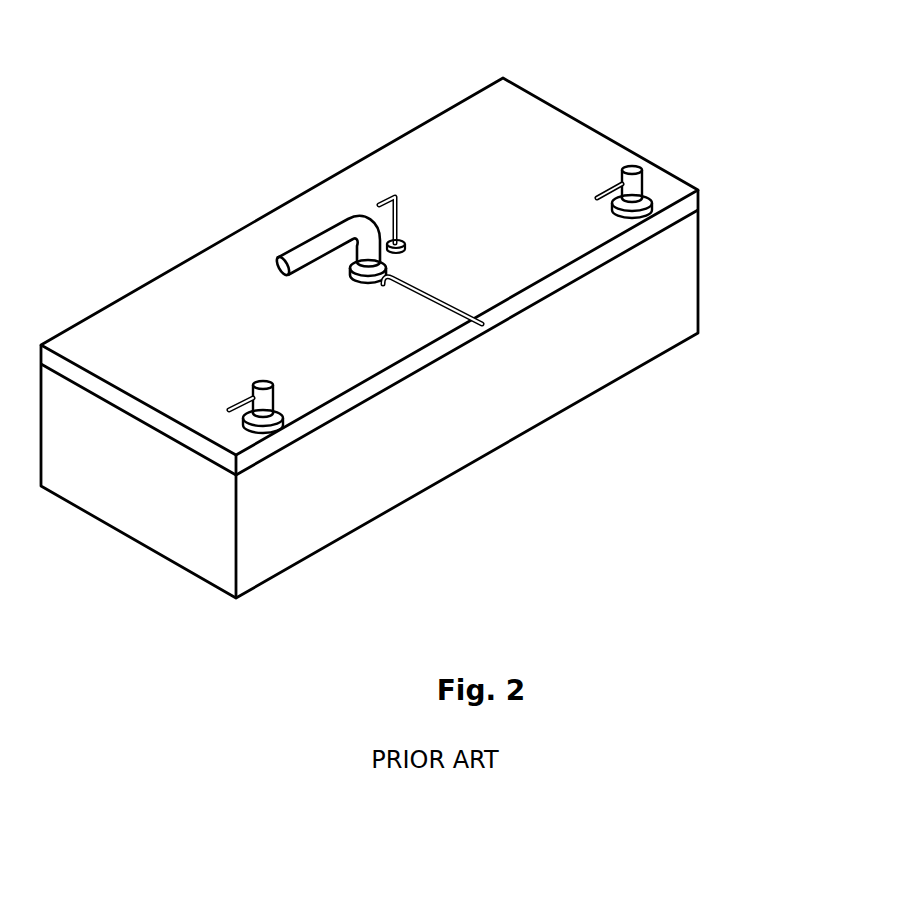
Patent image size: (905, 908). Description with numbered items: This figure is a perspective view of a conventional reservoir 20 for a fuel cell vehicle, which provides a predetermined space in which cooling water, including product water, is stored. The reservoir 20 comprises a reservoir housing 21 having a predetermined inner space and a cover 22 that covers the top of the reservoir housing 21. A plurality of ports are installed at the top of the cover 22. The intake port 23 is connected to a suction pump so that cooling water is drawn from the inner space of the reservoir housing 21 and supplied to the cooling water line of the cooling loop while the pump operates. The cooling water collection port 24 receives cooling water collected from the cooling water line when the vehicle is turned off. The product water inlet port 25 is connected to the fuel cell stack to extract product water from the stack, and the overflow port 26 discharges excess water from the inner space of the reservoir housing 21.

The reservoir 20 is at (676, 122).
The reservoir housing 21 is at (582, 370).
The cover 22 is at (457, 125).
The intake port 23 is at (305, 247).
The cooling water collection port 24 is at (388, 200).
The product water inlet port 25 is at (233, 407).
The overflow port 26 is at (450, 313).